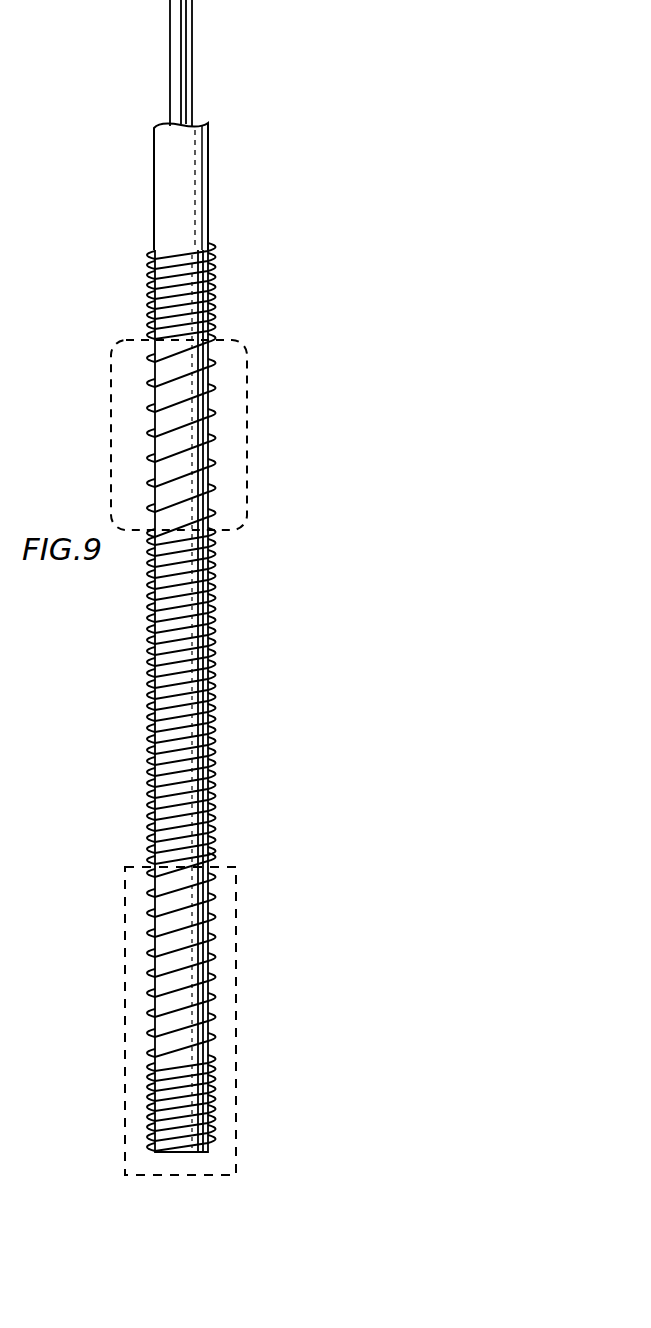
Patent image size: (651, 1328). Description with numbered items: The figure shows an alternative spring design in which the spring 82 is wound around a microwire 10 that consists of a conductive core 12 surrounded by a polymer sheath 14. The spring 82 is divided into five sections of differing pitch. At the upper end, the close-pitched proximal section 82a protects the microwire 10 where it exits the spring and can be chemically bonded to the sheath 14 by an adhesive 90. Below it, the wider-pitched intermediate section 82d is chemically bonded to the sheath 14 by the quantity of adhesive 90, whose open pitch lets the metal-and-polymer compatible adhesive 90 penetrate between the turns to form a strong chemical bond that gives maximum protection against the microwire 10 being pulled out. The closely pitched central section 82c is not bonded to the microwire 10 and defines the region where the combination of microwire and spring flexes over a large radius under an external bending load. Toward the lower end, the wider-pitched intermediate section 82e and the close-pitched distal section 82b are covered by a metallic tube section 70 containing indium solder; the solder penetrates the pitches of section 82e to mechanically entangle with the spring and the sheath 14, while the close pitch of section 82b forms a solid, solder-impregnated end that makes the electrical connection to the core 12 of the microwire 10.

The microwire 10 is at (272, 144).
The core 12 is at (193, 49).
The polymer sheath 14 is at (154, 188).
The metallic tube section 70 is at (125, 1130).
The spring 82 is at (184, 697).
The proximal section 82a is at (218, 289).
The distal section 82b is at (215, 1095).
The central section 82c is at (215, 734).
The intermediate section 82d is at (215, 432).
The intermediate section 82e is at (215, 951).
The adhesive 90 is at (111, 410).